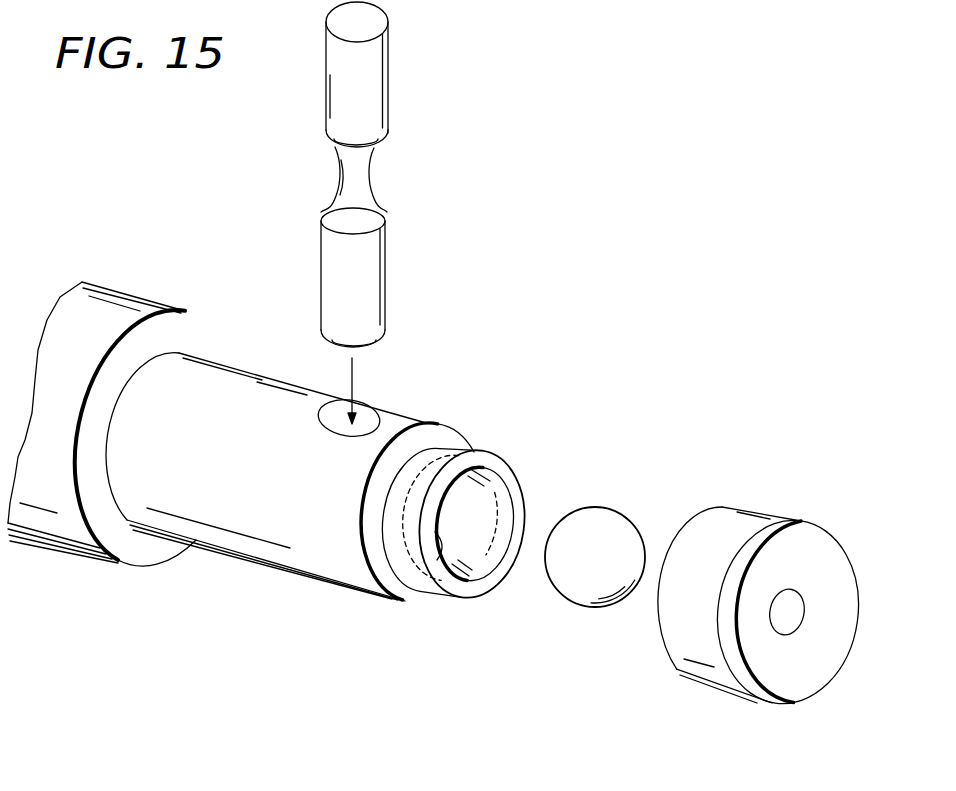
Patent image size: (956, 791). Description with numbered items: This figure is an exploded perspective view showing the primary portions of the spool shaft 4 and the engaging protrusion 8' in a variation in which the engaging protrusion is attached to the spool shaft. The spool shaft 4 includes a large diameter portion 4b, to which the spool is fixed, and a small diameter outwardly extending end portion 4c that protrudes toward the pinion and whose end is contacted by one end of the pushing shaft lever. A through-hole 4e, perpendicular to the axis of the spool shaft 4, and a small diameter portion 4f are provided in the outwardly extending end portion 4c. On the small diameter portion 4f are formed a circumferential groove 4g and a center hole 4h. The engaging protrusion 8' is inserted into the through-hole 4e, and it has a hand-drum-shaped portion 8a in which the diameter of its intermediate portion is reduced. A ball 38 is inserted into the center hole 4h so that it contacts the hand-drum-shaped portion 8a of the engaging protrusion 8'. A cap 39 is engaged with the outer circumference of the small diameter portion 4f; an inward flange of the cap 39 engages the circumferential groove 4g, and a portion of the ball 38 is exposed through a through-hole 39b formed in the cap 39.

The engaging protrusion 8' is at (403, 174).
The hand-drum-shaped portion 8a is at (366, 173).
The spool shaft 4 is at (278, 433).
The large diameter portion 4b is at (101, 296).
The outwardly extending end portion 4c is at (418, 413).
The through-hole 4e is at (374, 413).
The small diameter portion 4f is at (506, 462).
The circumferential groove 4g is at (388, 535).
The center hole 4h is at (438, 540).
The ball 38 is at (606, 508).
The cap 39 is at (769, 569).
The through-hole 39b is at (800, 592).